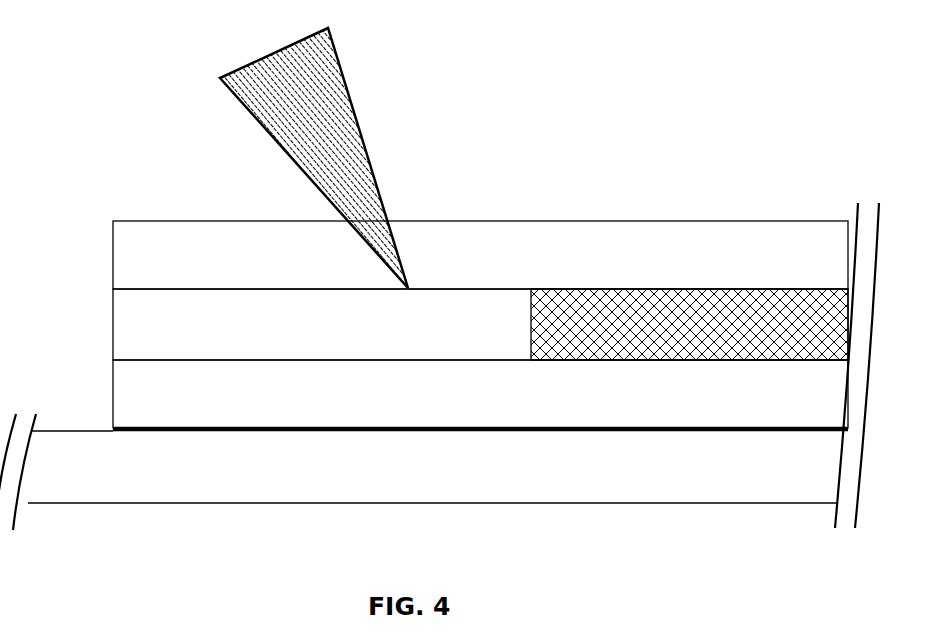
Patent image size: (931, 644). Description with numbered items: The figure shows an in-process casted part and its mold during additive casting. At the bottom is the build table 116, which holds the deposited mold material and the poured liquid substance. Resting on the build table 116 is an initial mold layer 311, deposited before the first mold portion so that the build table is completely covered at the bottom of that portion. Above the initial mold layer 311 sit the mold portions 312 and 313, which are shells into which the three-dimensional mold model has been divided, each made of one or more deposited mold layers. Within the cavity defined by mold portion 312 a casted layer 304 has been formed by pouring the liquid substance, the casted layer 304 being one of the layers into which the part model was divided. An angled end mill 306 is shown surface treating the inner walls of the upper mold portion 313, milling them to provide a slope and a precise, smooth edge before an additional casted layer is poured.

The build table 116 is at (257, 505).
The initial mold layer 311 is at (113, 393).
The mold portion 312 is at (113, 331).
The mold portion 313 is at (113, 255).
The casted layer 304 is at (597, 289).
The angled end mill 306 is at (274, 138).